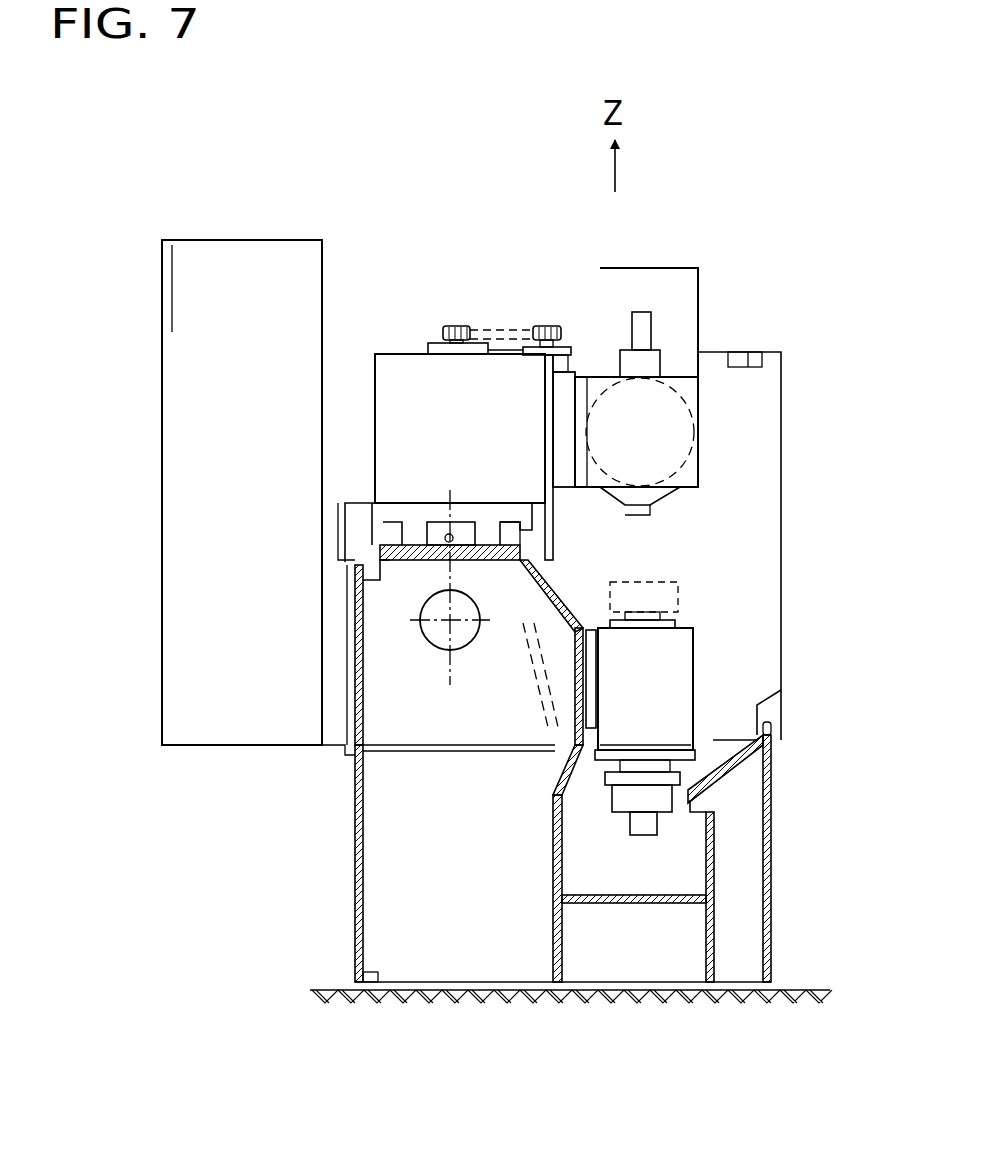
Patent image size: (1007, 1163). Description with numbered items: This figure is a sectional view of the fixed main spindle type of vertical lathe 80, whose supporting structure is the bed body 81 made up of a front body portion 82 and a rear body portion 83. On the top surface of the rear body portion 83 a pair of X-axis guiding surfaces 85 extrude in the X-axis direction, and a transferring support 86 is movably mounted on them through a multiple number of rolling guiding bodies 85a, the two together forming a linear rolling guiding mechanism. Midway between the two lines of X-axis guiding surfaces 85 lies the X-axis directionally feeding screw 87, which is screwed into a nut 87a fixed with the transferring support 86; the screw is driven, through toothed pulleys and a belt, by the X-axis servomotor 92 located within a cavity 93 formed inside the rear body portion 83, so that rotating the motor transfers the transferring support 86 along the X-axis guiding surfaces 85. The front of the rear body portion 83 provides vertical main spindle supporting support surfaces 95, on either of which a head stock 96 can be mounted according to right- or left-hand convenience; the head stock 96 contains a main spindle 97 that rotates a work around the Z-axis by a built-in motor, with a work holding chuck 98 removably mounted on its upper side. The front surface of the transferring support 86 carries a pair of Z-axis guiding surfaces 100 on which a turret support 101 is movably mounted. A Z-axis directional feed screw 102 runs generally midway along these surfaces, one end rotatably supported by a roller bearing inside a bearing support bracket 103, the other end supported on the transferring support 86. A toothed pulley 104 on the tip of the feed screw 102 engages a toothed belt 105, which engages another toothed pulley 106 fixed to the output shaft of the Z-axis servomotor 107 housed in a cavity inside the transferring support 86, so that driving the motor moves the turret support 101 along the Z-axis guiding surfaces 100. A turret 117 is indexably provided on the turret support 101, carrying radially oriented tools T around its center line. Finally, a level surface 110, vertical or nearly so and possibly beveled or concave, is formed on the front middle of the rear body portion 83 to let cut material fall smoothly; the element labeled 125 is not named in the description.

The fixed main spindle type of vertical lathe 80 is at (746, 324).
The bed body 81 is at (792, 812).
The front body portion 82 is at (637, 992).
The rear body portion 83 is at (428, 992).
The X-axis guiding surfaces 85 is at (510, 528).
The rolling guiding bodies 85a is at (353, 511).
The transferring support 86 is at (439, 427).
The X-axis directionally feeding screw 87 is at (434, 550).
The nut 87a is at (480, 560).
The X-axis servomotor 92 is at (437, 635).
The cavity 93 is at (439, 727).
The main spindle supporting support surfaces 95 is at (596, 640).
The head stock 96 is at (662, 712).
The main spindle 97 is at (652, 613).
The work holding chuck 98 is at (670, 583).
The Z-axis guiding surfaces 100 is at (558, 552).
The turret support 101 is at (557, 421).
The Z-axis directional feed screw 102 is at (534, 333).
The bearing support bracket 103 is at (570, 360).
The toothed pulley 104 is at (547, 324).
The toothed belt 105 is at (503, 340).
The toothed pulley 106 is at (451, 325).
The Z-axis servomotor 107 is at (430, 344).
The level surface 110 is at (548, 650).
The turret 117 is at (677, 450).
The cover panel 125 is at (268, 495).
The tools T is at (650, 515).